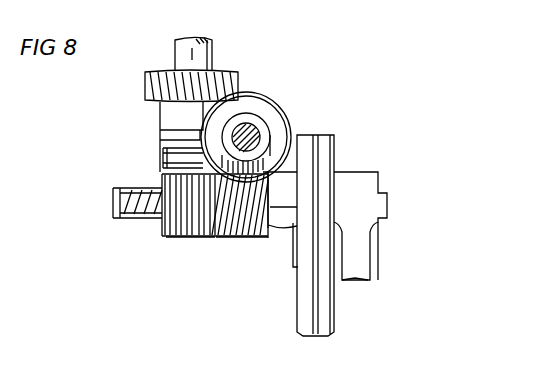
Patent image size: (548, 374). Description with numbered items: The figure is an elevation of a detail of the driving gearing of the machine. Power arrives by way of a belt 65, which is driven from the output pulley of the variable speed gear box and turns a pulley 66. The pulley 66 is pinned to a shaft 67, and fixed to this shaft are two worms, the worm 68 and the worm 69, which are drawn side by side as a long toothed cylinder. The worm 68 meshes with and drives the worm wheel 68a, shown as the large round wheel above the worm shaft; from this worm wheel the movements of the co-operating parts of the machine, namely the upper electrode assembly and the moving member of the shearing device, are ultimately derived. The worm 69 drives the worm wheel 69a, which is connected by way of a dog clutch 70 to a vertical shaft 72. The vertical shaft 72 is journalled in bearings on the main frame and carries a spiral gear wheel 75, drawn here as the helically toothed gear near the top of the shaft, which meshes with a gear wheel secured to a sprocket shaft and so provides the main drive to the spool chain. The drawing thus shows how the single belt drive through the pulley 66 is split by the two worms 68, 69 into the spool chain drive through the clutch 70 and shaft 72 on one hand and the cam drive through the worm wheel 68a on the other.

The belt 65 is at (334, 315).
The pulley 66 is at (293, 258).
The shaft 67 is at (222, 238).
The worm 68 is at (251, 240).
The worm wheel 68a is at (283, 104).
The worm 69 is at (172, 237).
The worm wheel 69a is at (118, 190).
The dog clutch 70 is at (183, 148).
The vertical shaft 72 is at (209, 52).
The spiral gear wheel 75 is at (240, 74).